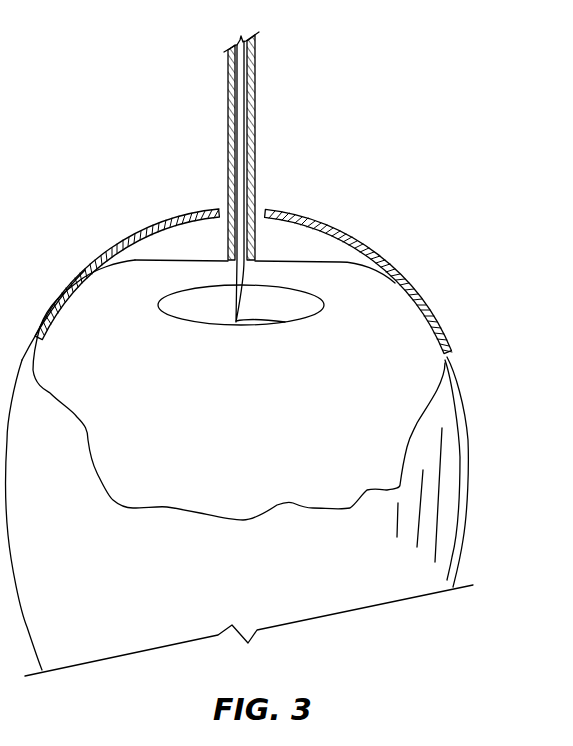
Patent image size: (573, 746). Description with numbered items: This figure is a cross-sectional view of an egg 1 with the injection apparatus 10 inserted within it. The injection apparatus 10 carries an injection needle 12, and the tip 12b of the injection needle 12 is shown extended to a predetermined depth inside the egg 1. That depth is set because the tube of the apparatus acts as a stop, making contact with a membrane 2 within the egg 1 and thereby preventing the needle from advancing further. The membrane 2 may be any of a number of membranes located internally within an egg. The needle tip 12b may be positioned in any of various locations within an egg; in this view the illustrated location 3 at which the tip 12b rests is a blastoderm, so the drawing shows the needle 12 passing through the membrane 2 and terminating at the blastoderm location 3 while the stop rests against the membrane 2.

The egg 1 is at (376, 258).
The membrane 2 is at (292, 262).
The location 3 is at (261, 328).
The injection apparatus 10 is at (208, 143).
The injection needle 12 is at (233, 274).
The tip 12b is at (285, 322).